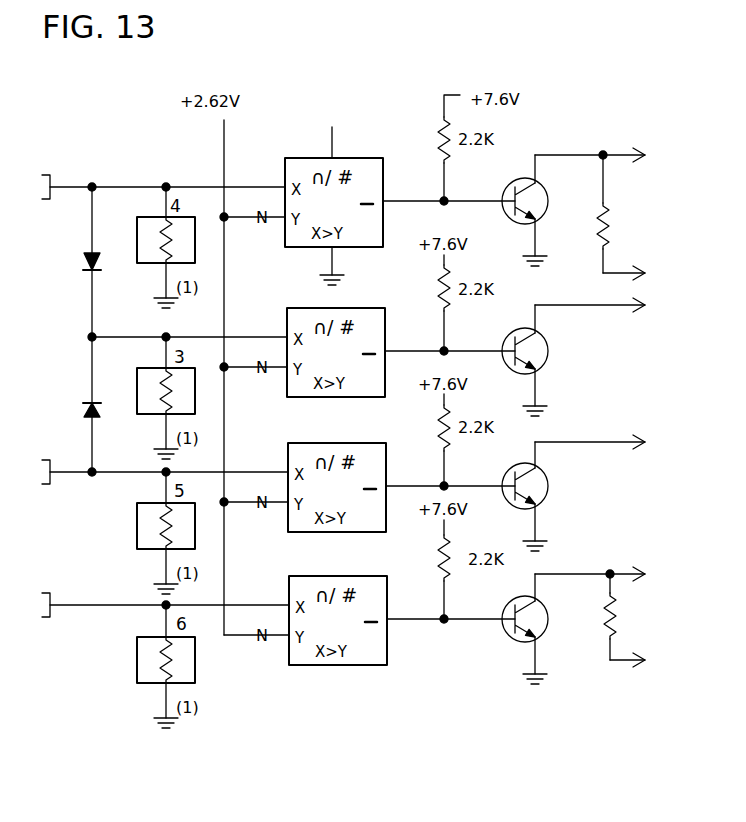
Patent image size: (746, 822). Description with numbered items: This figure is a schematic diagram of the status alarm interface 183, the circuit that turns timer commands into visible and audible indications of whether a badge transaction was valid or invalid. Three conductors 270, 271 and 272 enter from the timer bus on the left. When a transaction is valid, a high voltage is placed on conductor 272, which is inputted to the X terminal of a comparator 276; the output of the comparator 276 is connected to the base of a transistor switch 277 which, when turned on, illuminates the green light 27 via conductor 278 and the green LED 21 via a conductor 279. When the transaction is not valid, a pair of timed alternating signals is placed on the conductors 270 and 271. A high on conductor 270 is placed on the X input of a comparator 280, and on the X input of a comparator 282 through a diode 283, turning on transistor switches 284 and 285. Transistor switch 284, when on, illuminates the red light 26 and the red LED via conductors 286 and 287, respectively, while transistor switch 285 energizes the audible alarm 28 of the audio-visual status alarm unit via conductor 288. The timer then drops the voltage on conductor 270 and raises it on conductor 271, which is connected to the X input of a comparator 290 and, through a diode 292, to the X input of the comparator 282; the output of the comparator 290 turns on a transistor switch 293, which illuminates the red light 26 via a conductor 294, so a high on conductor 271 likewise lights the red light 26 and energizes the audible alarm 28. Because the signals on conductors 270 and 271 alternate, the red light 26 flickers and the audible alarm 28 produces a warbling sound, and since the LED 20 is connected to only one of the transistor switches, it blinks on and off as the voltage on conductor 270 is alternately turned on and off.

The status alarm interface 183 is at (404, 712).
The conductor 270 is at (72, 150).
The conductor 271 is at (62, 476).
The conductor 272 is at (70, 603).
The diode 283 is at (88, 256).
The diode 292 is at (84, 412).
The comparator 280 is at (357, 158).
The comparator 282 is at (363, 308).
The comparator 290 is at (367, 443).
The comparator 276 is at (368, 577).
The transistor switch 284 is at (549, 210).
The transistor switch 285 is at (575, 352).
The transistor switch 293 is at (550, 493).
The transistor switch 277 is at (550, 626).
The conductor 286 is at (620, 153).
The conductor 287 is at (622, 272).
The conductor 288 is at (619, 327).
The conductor 294 is at (620, 440).
The conductor 278 is at (622, 573).
The conductor 279 is at (632, 662).
The red light 26 is at (655, 299).
The audible alarm 28 is at (655, 304).
The red LED 20 is at (655, 273).
The green light 27 is at (658, 574).
The green LED 21 is at (658, 660).